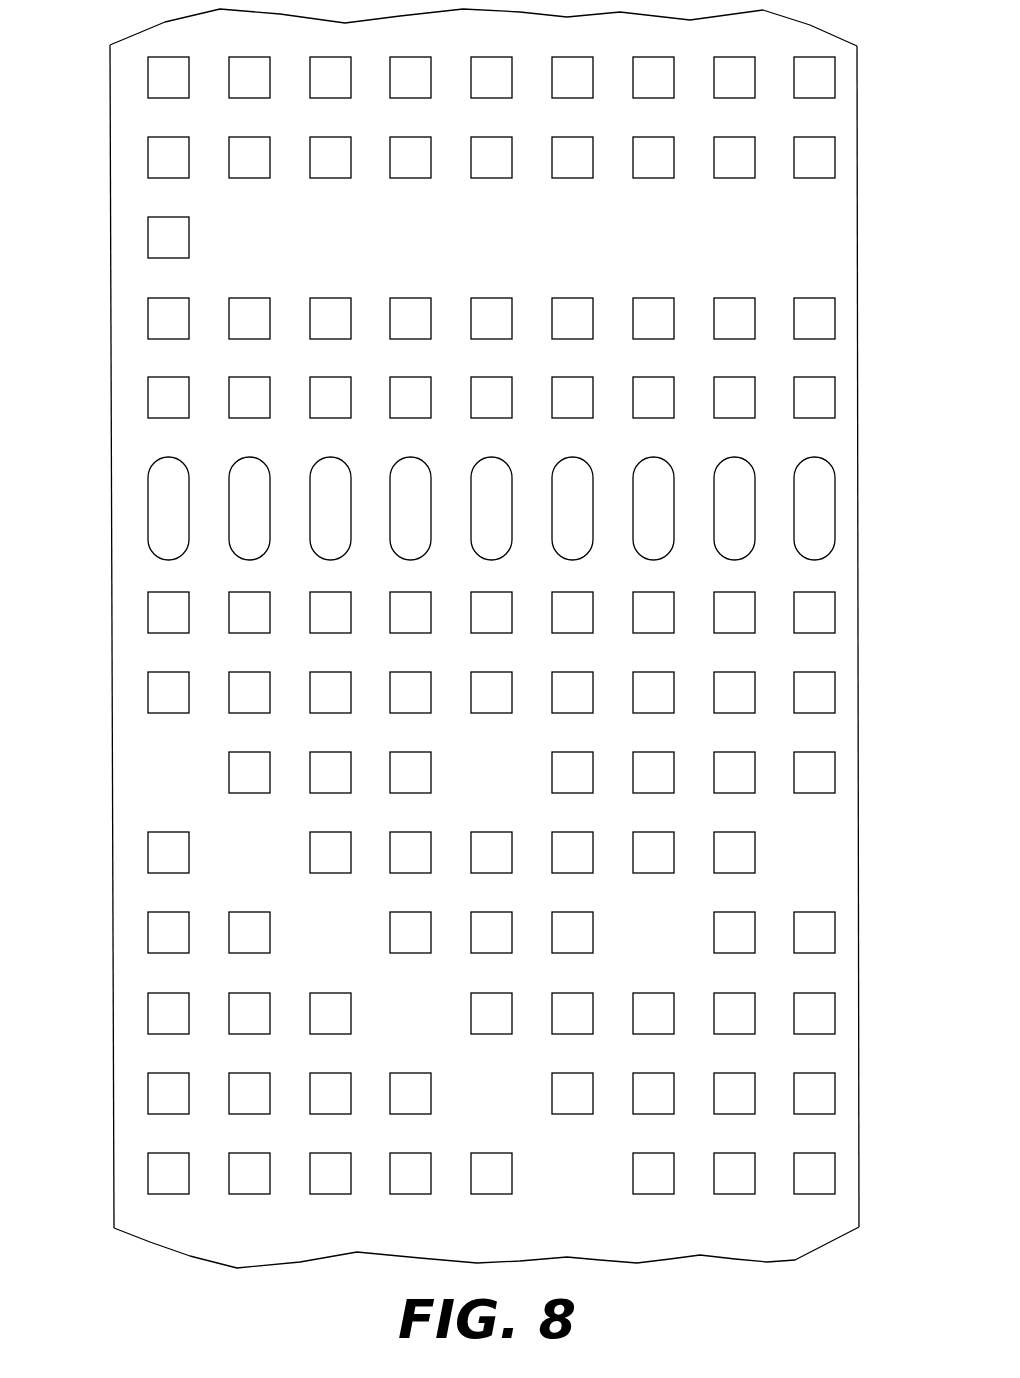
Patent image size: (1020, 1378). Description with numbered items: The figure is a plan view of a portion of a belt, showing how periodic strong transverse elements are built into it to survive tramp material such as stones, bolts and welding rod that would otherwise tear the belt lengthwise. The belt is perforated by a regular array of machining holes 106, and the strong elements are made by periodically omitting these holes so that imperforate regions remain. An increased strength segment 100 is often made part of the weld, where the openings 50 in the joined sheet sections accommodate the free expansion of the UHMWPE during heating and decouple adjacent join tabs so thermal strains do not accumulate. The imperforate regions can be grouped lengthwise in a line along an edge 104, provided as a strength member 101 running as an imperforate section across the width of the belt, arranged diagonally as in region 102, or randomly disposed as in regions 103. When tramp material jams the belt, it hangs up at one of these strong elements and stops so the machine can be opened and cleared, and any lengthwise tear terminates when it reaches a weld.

The openings 50 is at (148, 518).
The increased strength segment 100 is at (813, 450).
The strength member 101 is at (806, 254).
The region 102 is at (177, 755).
The regions 103 is at (514, 774).
The edge 104 is at (137, 311).
The machining holes 106 is at (148, 1095).